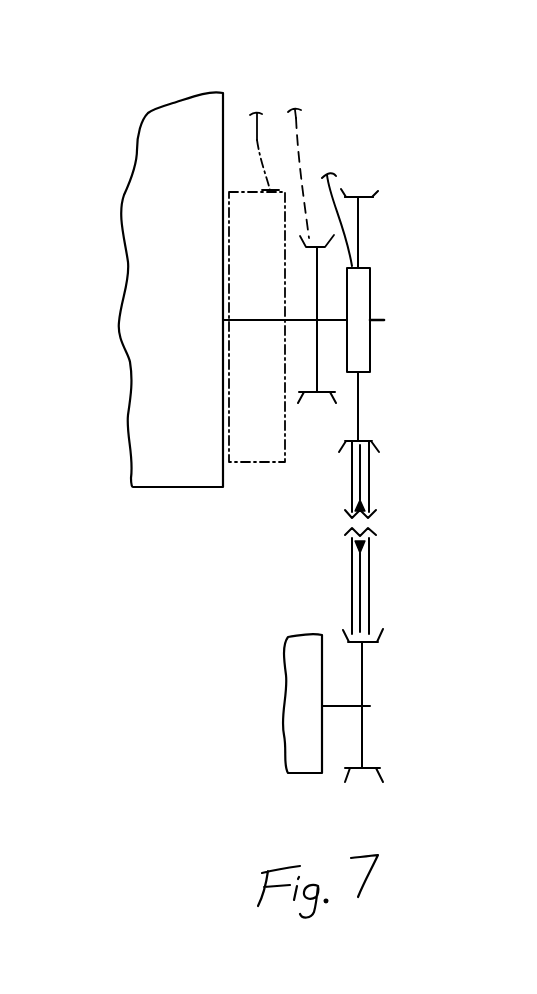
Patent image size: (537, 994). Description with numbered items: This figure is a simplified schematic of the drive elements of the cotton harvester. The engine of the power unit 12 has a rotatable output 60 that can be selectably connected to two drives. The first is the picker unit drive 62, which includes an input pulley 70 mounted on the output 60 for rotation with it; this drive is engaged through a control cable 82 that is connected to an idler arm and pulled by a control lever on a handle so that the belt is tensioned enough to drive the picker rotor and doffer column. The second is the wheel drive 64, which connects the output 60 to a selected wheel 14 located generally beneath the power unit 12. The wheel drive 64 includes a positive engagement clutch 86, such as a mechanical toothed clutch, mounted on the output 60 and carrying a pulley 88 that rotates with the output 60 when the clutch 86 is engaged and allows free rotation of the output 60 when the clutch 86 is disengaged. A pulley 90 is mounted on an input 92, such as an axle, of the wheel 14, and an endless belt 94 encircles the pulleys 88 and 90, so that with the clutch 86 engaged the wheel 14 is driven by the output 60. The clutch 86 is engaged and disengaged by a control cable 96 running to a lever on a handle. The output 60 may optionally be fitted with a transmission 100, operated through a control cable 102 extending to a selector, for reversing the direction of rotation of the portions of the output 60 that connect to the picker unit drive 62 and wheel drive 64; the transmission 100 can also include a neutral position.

The power unit 12 is at (138, 487).
The wheel 14 is at (303, 773).
The rotatable output 60 is at (382, 317).
The picker unit drive 62 is at (307, 396).
The wheel drive 64 is at (374, 192).
The input pulley 70 is at (331, 402).
The control cable 82 is at (297, 127).
The positive engagement clutch 86 is at (372, 268).
The pulley 88 is at (380, 202).
The pulley 90 is at (390, 782).
The input 92 is at (370, 705).
The endless belt 94 is at (373, 580).
The control cable 96 is at (327, 175).
The transmission 100 is at (236, 463).
The control cable 102 is at (257, 140).